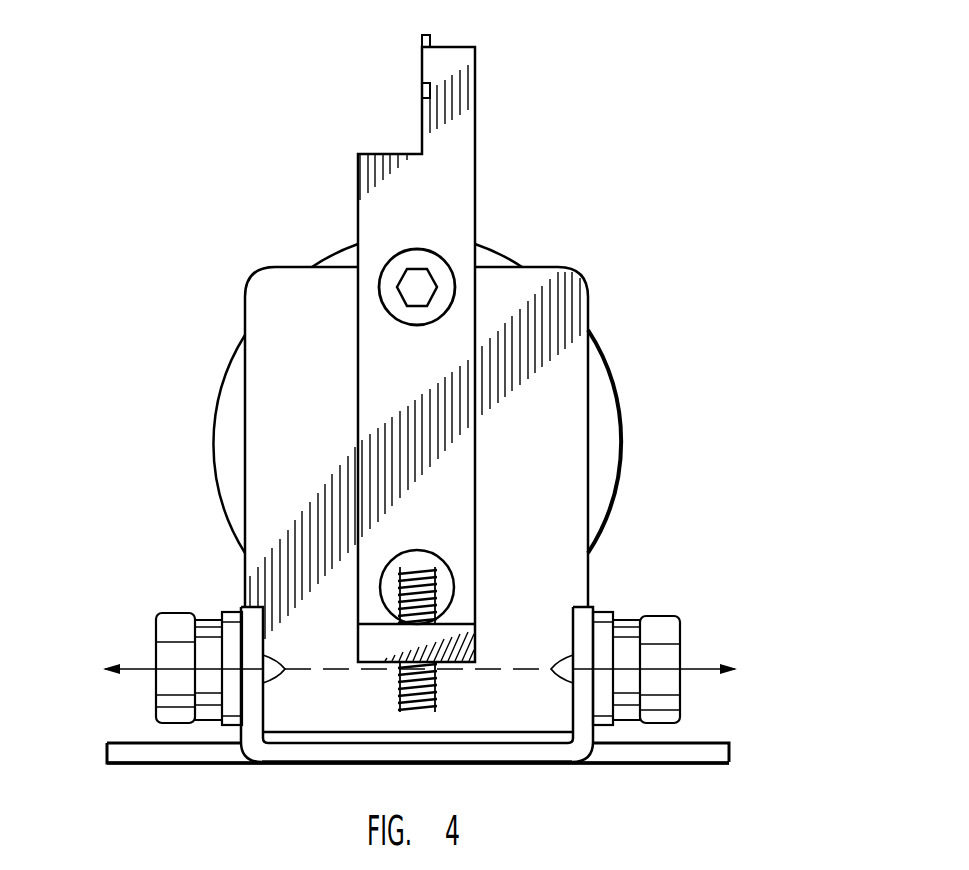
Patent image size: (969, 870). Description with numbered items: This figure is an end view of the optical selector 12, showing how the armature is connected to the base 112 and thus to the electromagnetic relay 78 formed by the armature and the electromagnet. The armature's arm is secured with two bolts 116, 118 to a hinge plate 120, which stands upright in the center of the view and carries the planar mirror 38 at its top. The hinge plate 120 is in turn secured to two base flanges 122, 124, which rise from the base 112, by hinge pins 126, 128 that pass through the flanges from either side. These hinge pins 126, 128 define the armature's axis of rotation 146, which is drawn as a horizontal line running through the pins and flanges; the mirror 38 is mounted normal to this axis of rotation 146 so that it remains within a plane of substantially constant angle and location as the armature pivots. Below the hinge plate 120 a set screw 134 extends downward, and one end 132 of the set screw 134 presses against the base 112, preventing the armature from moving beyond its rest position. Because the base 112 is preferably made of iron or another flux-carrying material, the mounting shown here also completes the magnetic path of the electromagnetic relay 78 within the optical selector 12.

The optical selector 12 is at (609, 213).
The planar mirror 38 is at (430, 40).
The electromagnetic relay 78 is at (607, 417).
The base 112 is at (128, 745).
The bolt 116 is at (388, 282).
The bolt 118 is at (413, 556).
The hinge plate 120 is at (534, 534).
The base flange 122 is at (242, 607).
The base flange 124 is at (590, 607).
The hinge pin 126 is at (170, 620).
The hinge pin 128 is at (661, 623).
The end of set screw 132 is at (417, 712).
The set screw 134 is at (437, 685).
The axis of rotation 146 is at (700, 667).